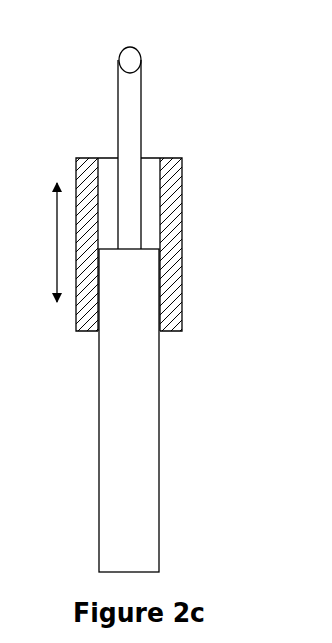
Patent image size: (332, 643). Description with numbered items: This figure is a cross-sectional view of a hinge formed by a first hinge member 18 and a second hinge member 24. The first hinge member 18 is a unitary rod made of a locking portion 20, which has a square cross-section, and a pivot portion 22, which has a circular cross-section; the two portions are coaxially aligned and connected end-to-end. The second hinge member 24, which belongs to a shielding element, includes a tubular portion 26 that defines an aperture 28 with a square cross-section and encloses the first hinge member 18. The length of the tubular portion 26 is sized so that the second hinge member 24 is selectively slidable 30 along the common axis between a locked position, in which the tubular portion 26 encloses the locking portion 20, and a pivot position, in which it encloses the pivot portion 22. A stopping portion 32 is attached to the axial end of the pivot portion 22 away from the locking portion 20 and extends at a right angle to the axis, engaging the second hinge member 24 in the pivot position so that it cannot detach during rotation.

The first hinge member 18 is at (133, 295).
The locking portion 20 is at (145, 422).
The pivot portion 22 is at (172, 133).
The second hinge member 24 is at (175, 273).
The tubular portion 26 is at (160, 215).
The aperture 28 is at (149, 168).
The selectively slidable 30 is at (40, 242).
The stopping portion 32 is at (128, 58).